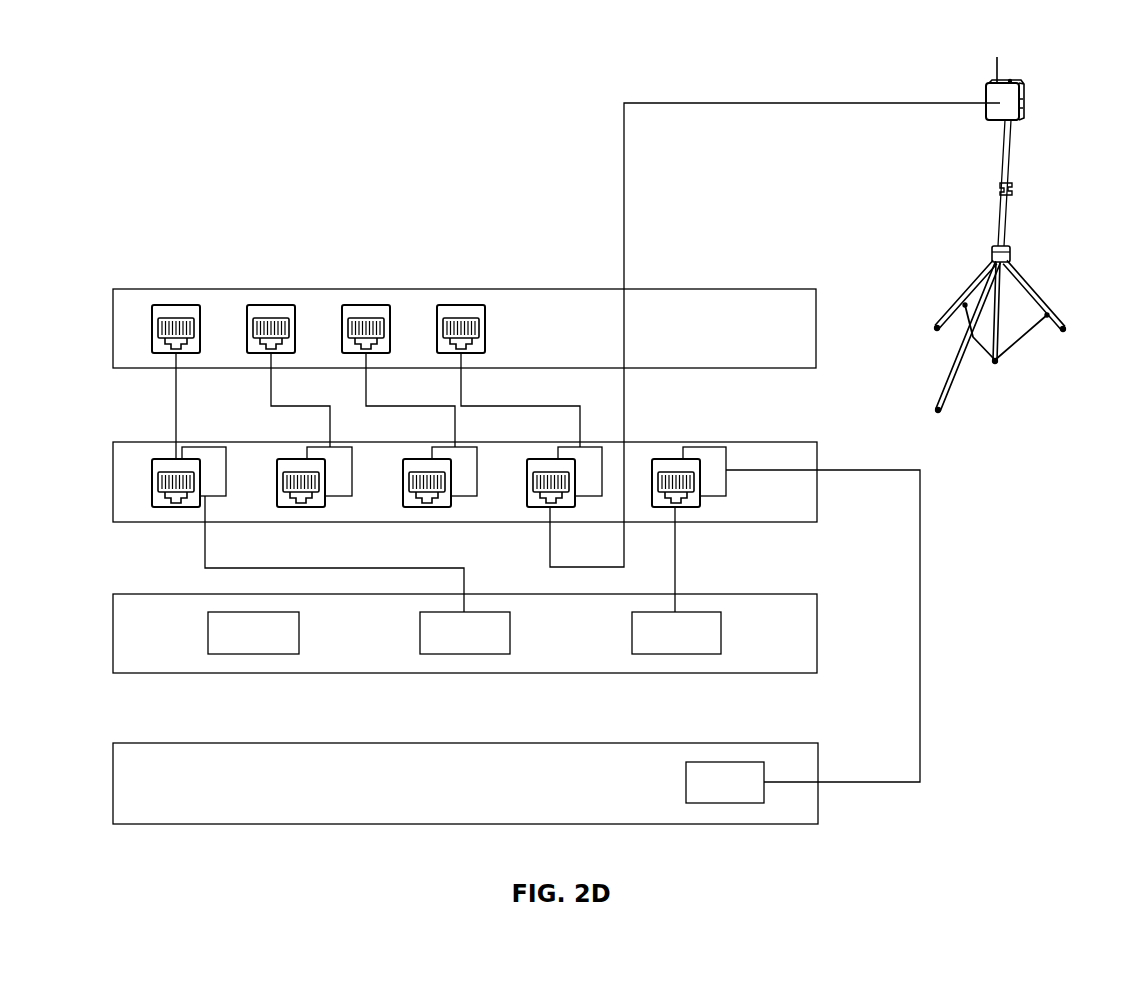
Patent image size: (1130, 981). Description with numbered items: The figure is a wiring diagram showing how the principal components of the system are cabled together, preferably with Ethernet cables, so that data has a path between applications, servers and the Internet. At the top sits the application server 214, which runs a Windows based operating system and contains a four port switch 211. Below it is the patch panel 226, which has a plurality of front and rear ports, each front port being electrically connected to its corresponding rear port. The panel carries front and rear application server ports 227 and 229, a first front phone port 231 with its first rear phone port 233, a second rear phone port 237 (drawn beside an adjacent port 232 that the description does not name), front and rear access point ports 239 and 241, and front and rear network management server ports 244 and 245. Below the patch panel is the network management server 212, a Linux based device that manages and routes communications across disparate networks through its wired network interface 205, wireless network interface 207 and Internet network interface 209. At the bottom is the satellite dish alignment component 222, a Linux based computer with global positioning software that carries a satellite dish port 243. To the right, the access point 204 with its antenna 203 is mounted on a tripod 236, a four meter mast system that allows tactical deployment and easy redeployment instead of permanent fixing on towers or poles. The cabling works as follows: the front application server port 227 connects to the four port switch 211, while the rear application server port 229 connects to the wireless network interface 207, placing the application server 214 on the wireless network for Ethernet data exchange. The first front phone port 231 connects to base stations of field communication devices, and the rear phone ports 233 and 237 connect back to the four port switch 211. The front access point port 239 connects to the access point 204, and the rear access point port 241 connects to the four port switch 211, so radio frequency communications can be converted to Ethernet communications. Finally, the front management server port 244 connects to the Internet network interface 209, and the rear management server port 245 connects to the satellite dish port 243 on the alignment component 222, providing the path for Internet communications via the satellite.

The antenna 203 is at (998, 72).
The access point 204 is at (1044, 144).
The wired network interface 205 is at (254, 654).
The wireless network interface 207 is at (464, 654).
The Internet network interface 209 is at (675, 654).
The four port switch 211 is at (299, 261).
The network management server 212 is at (504, 656).
The application server 214 is at (816, 328).
The satellite dish alignment component 222 is at (504, 805).
The patch panel 226 is at (504, 503).
The front application server port 227 is at (165, 509).
The rear application server port 229 is at (210, 490).
The first front phone port 231 is at (297, 508).
The interface module 232 is at (460, 490).
The first rear phone port 233 is at (334, 490).
The tripod 236 is at (1045, 292).
The second rear phone port 237 is at (423, 508).
The front access point port 239 is at (537, 508).
The rear access point port 241 is at (580, 490).
The satellite dish port 243 is at (724, 803).
The front management server port 244 is at (662, 508).
The rear management server port 245 is at (713, 490).